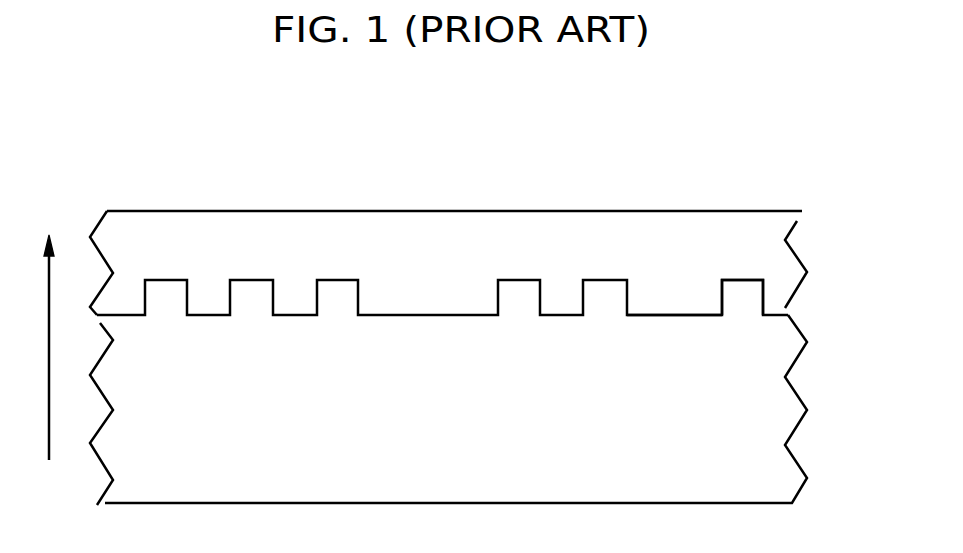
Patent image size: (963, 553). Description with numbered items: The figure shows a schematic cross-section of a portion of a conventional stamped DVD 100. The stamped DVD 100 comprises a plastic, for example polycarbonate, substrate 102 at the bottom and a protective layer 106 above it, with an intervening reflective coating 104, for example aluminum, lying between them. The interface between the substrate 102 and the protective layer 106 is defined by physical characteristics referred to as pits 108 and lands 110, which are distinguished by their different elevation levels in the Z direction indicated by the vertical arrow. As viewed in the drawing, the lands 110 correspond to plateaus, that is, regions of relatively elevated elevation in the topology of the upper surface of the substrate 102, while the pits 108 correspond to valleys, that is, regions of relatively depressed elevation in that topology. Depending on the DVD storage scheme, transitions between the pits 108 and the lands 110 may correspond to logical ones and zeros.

The stamped DVD 100 is at (792, 90).
The substrate 102 is at (811, 420).
The reflective coating 104 is at (811, 317).
The protective layer 106 is at (811, 245).
The pits 108 is at (679, 305).
The lands 110 is at (743, 290).